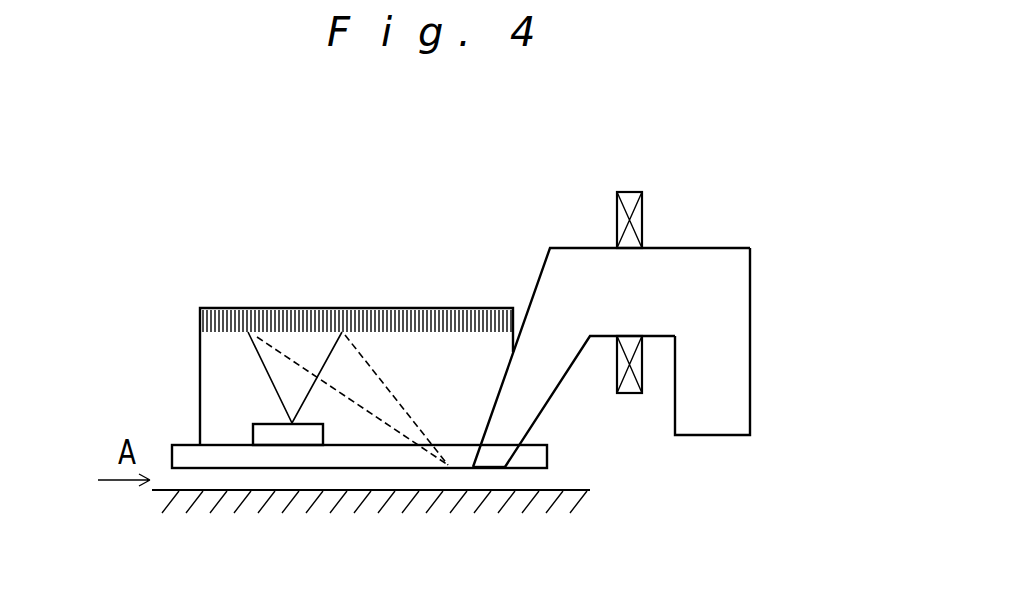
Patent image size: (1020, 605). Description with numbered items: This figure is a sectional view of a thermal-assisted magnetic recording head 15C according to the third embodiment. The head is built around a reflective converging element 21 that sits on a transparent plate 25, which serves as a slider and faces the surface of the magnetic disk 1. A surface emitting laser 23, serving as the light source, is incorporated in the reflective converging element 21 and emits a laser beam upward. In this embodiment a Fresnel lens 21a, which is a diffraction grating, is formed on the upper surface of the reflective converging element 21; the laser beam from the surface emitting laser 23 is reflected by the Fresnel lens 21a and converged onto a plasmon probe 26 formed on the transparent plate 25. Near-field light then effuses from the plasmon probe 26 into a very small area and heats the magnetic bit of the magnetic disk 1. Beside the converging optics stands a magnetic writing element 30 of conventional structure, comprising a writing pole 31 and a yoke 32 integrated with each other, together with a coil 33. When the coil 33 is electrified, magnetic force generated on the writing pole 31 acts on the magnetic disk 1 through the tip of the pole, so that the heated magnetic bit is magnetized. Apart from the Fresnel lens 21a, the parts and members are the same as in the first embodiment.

The magnetic disk 1 is at (575, 480).
The thermal-assisted magnetic recording head 15C is at (357, 232).
The reflective converging element 21 is at (200, 362).
The Fresnel lens 21a is at (263, 307).
The surface emitting laser 23 is at (262, 447).
The transparent plate 25 is at (367, 460).
The plasmon probe 26 is at (450, 465).
The magnetic writing element 30 is at (584, 246).
The writing pole 31 is at (538, 277).
The yoke 32 is at (752, 380).
The coil 33 is at (643, 226).